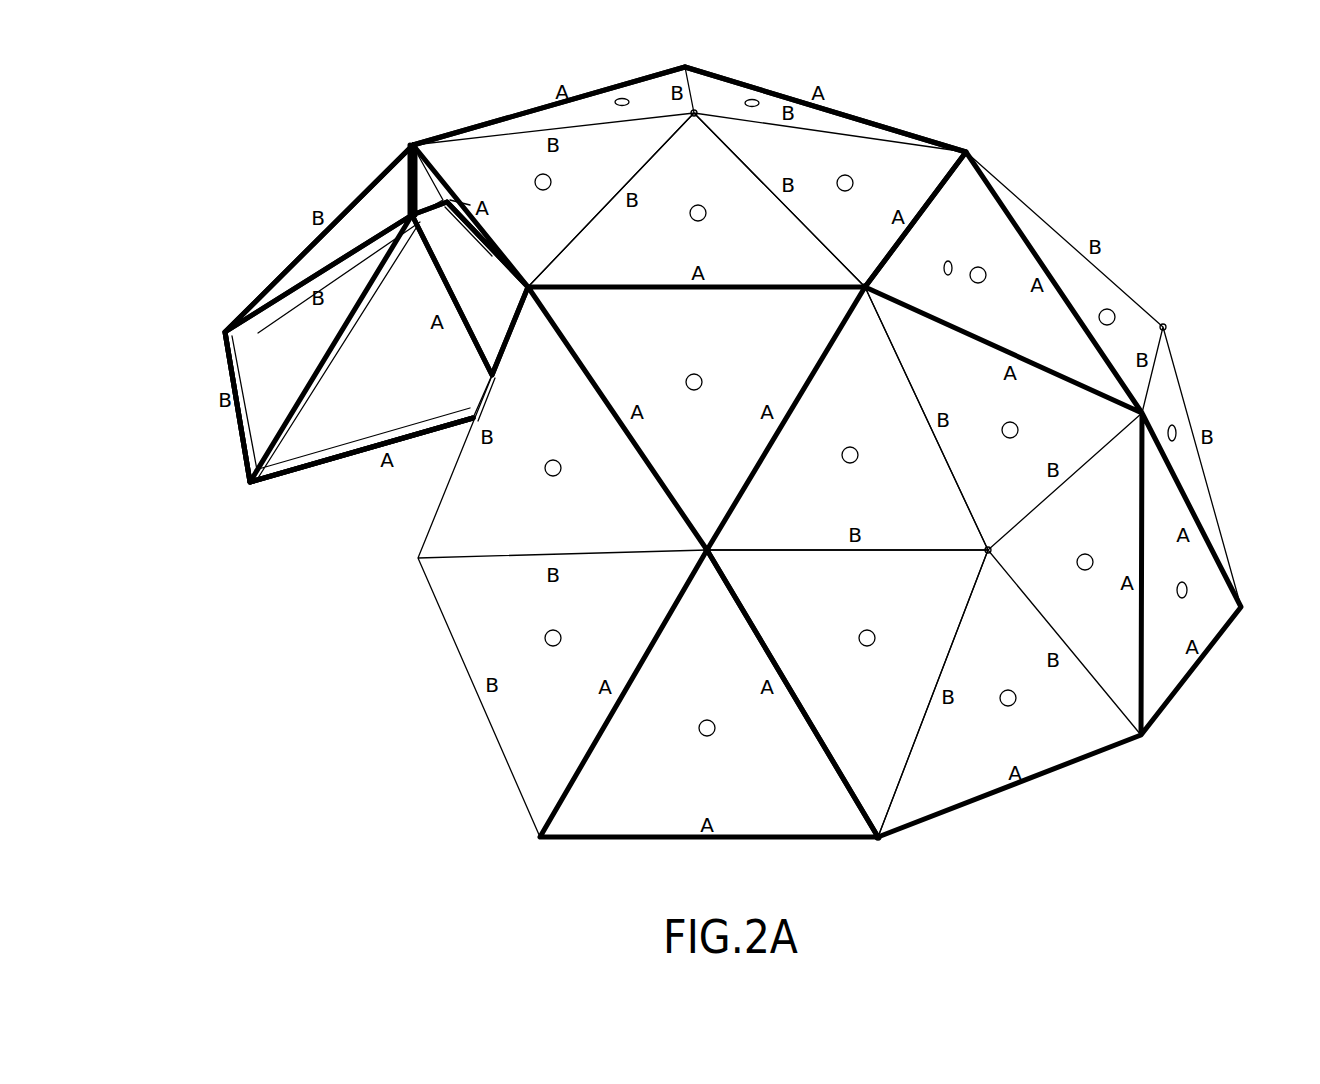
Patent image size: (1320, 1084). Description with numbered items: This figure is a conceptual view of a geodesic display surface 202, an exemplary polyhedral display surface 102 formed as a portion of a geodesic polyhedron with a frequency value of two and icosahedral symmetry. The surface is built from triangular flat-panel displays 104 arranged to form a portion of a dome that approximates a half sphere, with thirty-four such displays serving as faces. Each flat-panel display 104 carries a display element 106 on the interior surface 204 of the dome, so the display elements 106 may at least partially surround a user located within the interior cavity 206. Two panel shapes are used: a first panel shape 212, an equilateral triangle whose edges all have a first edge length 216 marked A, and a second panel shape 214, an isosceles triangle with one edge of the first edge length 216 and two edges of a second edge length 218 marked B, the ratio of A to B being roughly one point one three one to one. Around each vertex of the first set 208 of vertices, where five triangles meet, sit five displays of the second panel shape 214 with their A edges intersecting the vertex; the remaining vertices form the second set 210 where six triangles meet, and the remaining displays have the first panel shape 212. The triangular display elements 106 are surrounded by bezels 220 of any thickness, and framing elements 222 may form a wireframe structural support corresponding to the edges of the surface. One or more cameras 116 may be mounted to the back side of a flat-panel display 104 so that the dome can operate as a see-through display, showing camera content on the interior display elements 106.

The polyhedral display surface 102 is at (274, 74).
The flat-panel display 104 is at (347, 455).
The display element 106 is at (425, 397).
The camera 116 is at (862, 630).
The geodesic display surface 202 is at (422, 108).
The interior surface 204 is at (253, 362).
The interior cavity 206 is at (308, 535).
The first set of vertices 208 is at (697, 110).
The second set of vertices 210 is at (871, 284).
The first panel shape 212 is at (716, 364).
The second panel shape 214 is at (872, 434).
The first edge length 216 is at (817, 740).
The second edge length 218 is at (962, 615).
The bezel 220 is at (260, 302).
The framing element 222 is at (932, 188).